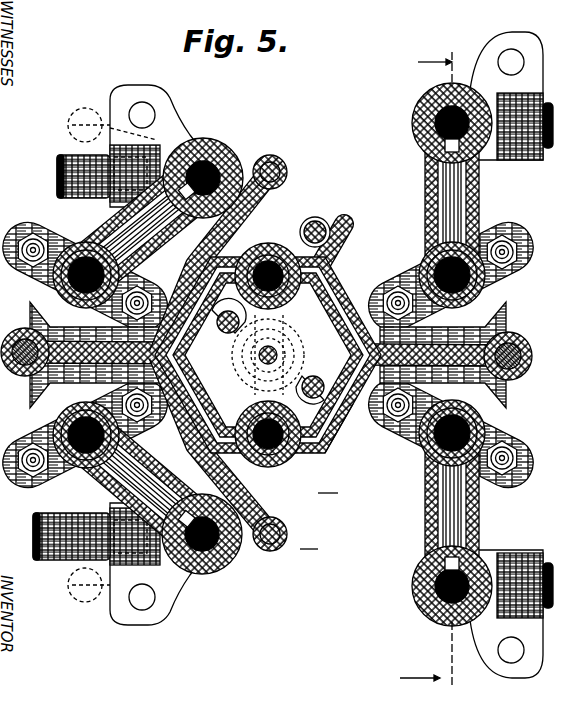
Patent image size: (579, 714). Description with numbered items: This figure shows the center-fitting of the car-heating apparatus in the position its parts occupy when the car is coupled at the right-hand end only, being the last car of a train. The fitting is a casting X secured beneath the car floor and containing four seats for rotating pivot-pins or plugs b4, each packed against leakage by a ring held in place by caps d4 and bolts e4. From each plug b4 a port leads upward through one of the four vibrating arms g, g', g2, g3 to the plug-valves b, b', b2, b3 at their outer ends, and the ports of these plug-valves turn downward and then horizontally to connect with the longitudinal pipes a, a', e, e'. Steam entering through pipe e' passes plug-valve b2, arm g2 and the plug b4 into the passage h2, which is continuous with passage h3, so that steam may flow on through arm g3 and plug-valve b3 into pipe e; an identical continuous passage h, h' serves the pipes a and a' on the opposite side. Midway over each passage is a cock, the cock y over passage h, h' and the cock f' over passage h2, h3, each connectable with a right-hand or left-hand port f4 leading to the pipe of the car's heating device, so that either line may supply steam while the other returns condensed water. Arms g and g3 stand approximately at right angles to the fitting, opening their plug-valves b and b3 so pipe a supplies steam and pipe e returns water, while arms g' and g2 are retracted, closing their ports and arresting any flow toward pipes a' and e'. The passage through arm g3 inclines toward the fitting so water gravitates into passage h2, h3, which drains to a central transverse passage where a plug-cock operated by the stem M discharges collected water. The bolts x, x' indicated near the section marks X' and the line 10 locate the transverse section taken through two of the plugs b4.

The section line 10 is at (428, 373).
The pipe a is at (518, 96).
The pipe a' is at (128, 150).
The plug-valve b is at (443, 123).
The plug-valve b' is at (203, 170).
The plug-valve b2 is at (197, 576).
The plug-valve b3 is at (414, 599).
The pivot-pin or plug b4 is at (56, 292).
The cap d4 is at (268, 355).
The pipe e is at (523, 472).
The pipe e' is at (115, 564).
The bolt e4 is at (264, 369).
The lower bushing ring f' is at (268, 445).
The port f4 is at (268, 355).
The arm g is at (444, 215).
The arm g' is at (136, 232).
The arm g2 is at (110, 490).
The arm g3 is at (428, 508).
The passage h is at (268, 335).
The passage h' is at (214, 263).
The passage h2 is at (178, 446).
The passage h3 is at (365, 446).
The stem M is at (270, 355).
The stay rod x is at (270, 154).
The stay rod x' is at (270, 552).
The casting X is at (328, 501).
The section mark X' is at (308, 542).
The plug valve or cock y is at (252, 279).